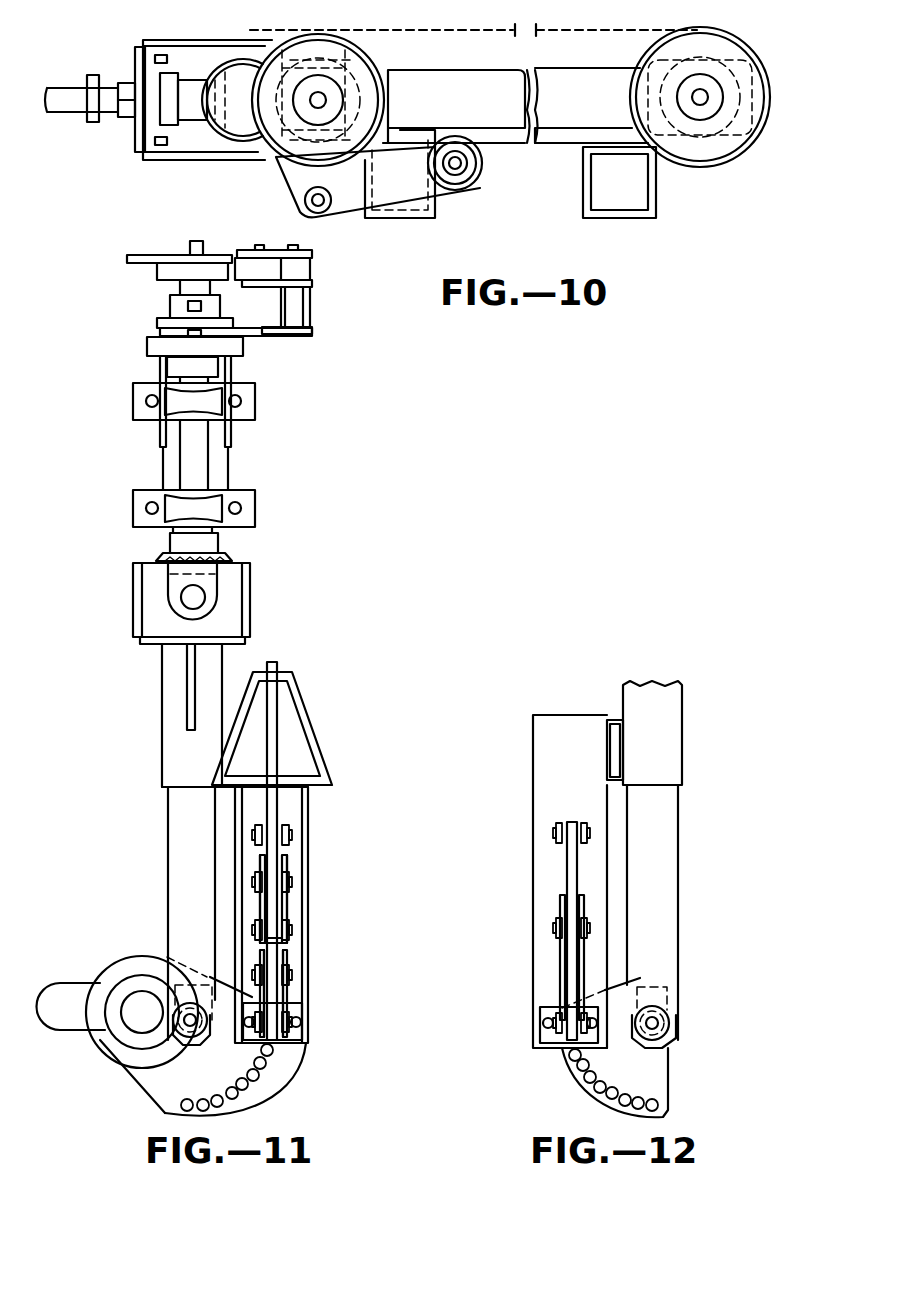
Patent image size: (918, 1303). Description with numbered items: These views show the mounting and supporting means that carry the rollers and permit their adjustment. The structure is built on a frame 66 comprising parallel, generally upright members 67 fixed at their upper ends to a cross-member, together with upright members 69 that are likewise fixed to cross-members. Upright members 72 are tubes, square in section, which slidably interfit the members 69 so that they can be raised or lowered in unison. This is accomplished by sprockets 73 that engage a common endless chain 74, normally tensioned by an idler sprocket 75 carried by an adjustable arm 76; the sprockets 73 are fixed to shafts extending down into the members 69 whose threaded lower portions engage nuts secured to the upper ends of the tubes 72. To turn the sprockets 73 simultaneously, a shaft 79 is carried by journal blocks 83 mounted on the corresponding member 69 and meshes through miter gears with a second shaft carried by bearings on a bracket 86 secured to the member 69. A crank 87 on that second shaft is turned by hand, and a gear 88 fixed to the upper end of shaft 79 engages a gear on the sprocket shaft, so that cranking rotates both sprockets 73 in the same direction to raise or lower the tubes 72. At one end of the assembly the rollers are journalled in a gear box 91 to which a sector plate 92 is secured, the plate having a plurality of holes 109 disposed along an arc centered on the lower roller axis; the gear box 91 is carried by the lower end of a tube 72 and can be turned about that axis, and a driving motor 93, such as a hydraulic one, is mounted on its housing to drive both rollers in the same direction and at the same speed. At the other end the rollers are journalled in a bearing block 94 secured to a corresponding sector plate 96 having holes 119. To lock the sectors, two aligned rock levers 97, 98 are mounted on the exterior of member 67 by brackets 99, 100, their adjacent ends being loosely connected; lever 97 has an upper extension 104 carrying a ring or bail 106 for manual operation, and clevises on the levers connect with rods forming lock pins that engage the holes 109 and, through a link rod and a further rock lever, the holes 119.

In FIG. 11, the frame 66 is at (333, 817).
In FIG. 12, the upright members 67 is at (542, 890).
In FIG. 10, the upright members 69 is at (656, 200).
In FIG. 11, the upright members 72 is at (186, 892).
In FIG. 12, the upright members 72 is at (670, 862).
In FIG. 10, the sprockets 73 is at (378, 70).
In FIG. 11, the sprockets 73 is at (136, 262).
In FIG. 10, the endless chain 74 is at (497, 29).
In FIG. 10, the idler sprocket 75 is at (480, 180).
In FIG. 10, the adjustable arm 76 is at (405, 188).
In FIG. 11, the adjustable arm 76 is at (277, 250).
In FIG. 11, the shaft 79 is at (197, 463).
In FIG. 11, the journal blocks 83 is at (213, 404).
In FIG. 11, the bracket 86 is at (190, 684).
In FIG. 10, the crank 87 is at (93, 121).
In FIG. 11, the crank 87 is at (210, 586).
In FIG. 11, the gear 88 is at (243, 346).
In FIG. 11, the gear box 91 is at (120, 1050).
In FIG. 11, the sector plate 92 is at (160, 1094).
In FIG. 11, the driving motor 93 is at (140, 996).
In FIG. 11, the bearing block 94 is at (209, 1001).
In FIG. 12, the bearing block 94 is at (645, 977).
In FIG. 12, the sector plate 96 is at (657, 1081).
In FIG. 11, the rock lever 97 is at (274, 863).
In FIG. 11, the rock lever 98 is at (274, 958).
In FIG. 11, the bracket 99 is at (284, 901).
In FIG. 11, the bracket 100 is at (286, 994).
In FIG. 11, the upper extension 104 is at (279, 669).
In FIG. 11, the ring or bail 106 is at (318, 750).
In FIG. 11, the holes 109 is at (266, 1073).
In FIG. 12, the holes 119 is at (588, 1078).